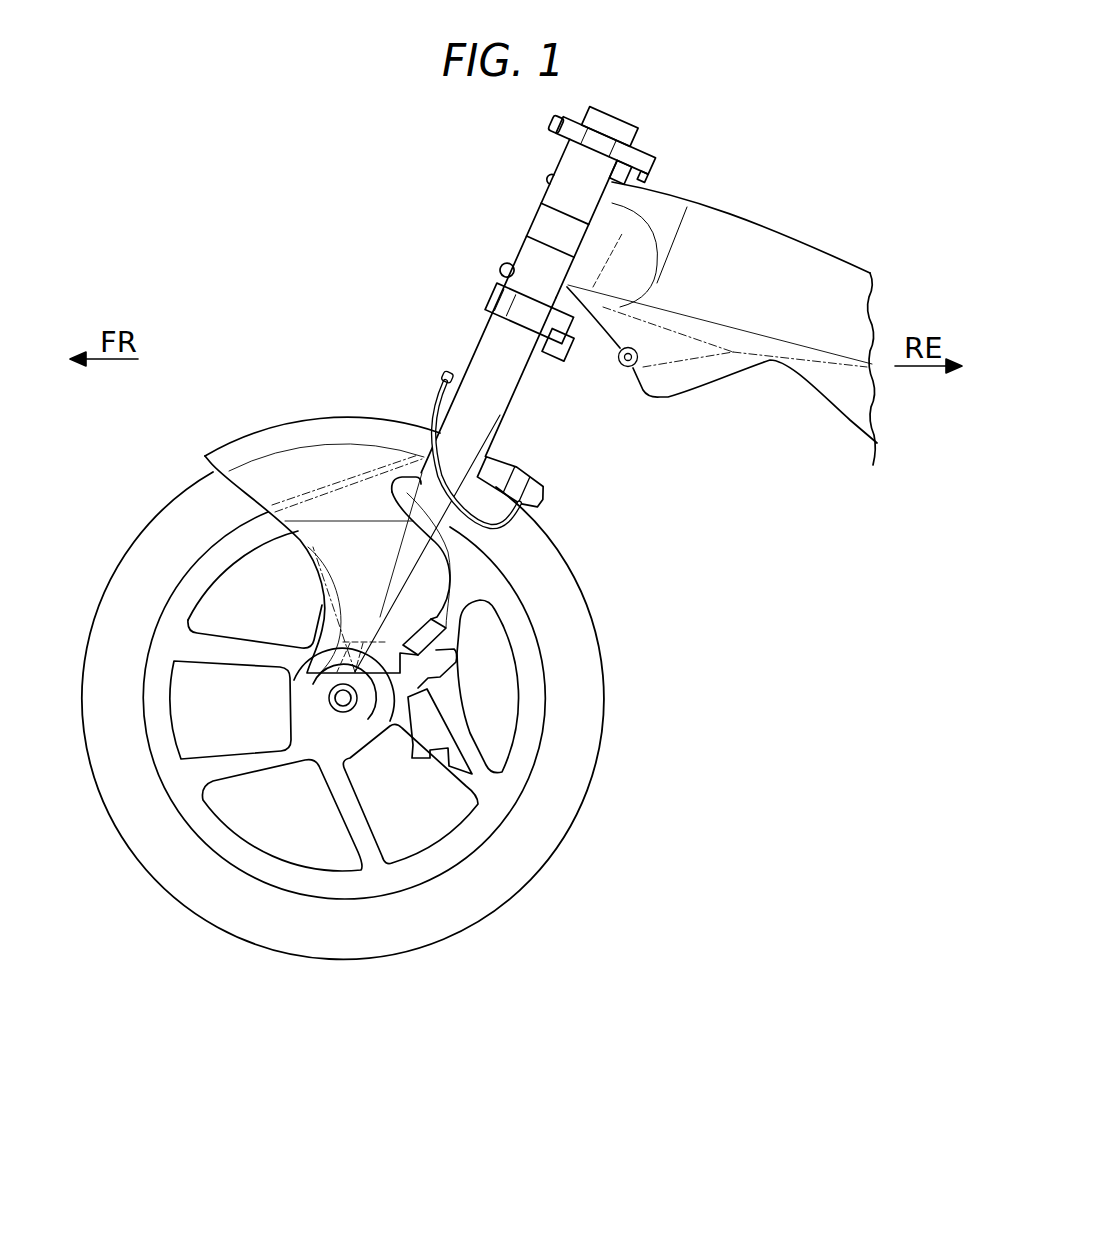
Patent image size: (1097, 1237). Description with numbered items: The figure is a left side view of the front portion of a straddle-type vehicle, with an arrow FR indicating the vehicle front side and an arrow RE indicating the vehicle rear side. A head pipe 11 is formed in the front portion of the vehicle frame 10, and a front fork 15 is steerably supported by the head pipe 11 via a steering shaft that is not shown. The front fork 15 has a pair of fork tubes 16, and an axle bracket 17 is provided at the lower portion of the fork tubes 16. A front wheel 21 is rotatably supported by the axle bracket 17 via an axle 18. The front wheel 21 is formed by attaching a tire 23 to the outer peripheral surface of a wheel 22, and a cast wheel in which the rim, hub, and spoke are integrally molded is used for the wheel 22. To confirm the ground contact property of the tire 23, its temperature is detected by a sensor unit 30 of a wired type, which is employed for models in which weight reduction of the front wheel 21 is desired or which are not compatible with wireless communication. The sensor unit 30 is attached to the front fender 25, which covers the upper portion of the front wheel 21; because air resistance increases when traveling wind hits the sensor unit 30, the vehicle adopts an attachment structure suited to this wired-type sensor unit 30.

The vehicle frame 10 is at (794, 211).
The head pipe 11 is at (627, 200).
The front fork 15 is at (517, 245).
The fork tubes 16 is at (467, 398).
The axle bracket 17 is at (418, 688).
The axle 18 is at (340, 703).
The front wheel 21 is at (140, 516).
The wheel 22 is at (207, 603).
The tire 23 is at (112, 566).
The front fender 25 is at (268, 427).
The sensor unit 30 is at (538, 471).